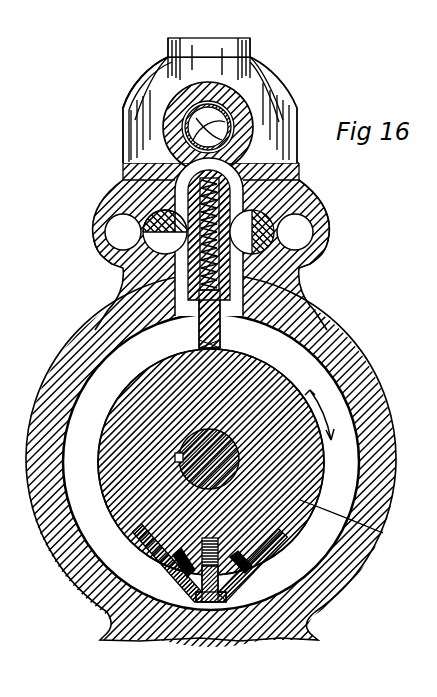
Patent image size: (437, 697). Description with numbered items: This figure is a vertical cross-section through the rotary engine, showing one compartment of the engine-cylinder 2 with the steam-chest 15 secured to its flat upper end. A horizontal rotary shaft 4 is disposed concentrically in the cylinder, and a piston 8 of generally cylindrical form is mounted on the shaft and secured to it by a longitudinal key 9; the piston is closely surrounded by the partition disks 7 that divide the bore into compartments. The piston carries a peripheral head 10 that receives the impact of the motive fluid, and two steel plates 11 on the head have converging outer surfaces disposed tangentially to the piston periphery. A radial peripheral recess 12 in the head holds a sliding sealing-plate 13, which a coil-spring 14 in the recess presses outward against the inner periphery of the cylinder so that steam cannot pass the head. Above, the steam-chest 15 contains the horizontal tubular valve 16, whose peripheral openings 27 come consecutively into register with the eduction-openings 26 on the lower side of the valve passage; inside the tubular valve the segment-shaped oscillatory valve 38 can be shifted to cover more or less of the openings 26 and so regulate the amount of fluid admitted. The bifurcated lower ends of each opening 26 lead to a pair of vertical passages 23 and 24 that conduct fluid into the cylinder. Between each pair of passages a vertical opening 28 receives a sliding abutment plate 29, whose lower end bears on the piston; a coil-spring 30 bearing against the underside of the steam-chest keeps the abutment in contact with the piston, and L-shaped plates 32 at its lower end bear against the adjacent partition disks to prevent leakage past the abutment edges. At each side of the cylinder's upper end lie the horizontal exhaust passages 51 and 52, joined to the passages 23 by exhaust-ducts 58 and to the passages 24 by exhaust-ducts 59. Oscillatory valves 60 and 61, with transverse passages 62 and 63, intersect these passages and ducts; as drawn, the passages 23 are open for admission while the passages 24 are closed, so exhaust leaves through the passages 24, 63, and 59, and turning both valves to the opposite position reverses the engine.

The engine-cylinder 2 is at (393, 478).
The rotary shaft 4 is at (349, 526).
The vertical disks 7 is at (203, 372).
The pistons 8 is at (100, 482).
The longitudinal key 9 is at (300, 500).
The peripheral head 10 is at (165, 582).
The steel plates 11 is at (268, 560).
The radial peripheral recess 12 is at (238, 578).
The sealing-plate 13 is at (192, 606).
The coil-spring 14 is at (222, 541).
The steam-chest 15 is at (128, 101).
The tubular valve 16 is at (236, 108).
The vertical passages 23 is at (242, 290).
The vertical passages 24 is at (180, 278).
The eduction-openings 26 is at (278, 174).
The openings 27 is at (138, 108).
The vertical openings 28 is at (228, 203).
The plates 29 is at (200, 335).
The coil-spring 30 is at (322, 250).
The L-shaped plates 32 is at (220, 336).
The oscillatory valve 38 is at (200, 132).
The horizontal passage 51 is at (295, 232).
The horizontal passage 52 is at (123, 232).
The exhaust-ducts 58 is at (318, 226).
The exhaust-ducts 59 is at (108, 262).
The oscillatory valve 60 is at (310, 214).
The oscillatory valve 61 is at (160, 216).
The transverse passages 62 is at (312, 220).
The transverse passages 63 is at (210, 232).